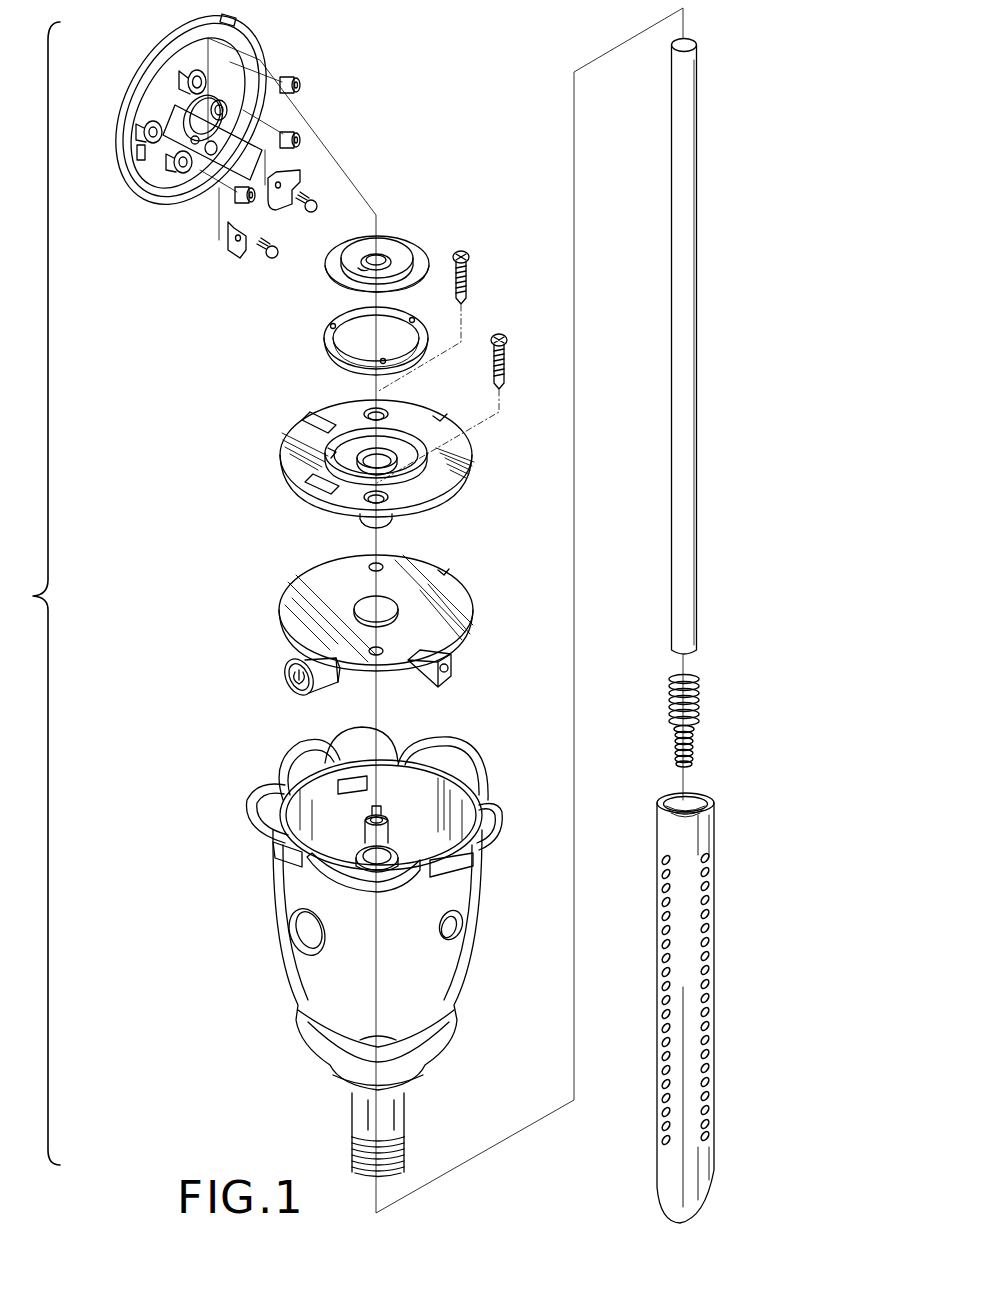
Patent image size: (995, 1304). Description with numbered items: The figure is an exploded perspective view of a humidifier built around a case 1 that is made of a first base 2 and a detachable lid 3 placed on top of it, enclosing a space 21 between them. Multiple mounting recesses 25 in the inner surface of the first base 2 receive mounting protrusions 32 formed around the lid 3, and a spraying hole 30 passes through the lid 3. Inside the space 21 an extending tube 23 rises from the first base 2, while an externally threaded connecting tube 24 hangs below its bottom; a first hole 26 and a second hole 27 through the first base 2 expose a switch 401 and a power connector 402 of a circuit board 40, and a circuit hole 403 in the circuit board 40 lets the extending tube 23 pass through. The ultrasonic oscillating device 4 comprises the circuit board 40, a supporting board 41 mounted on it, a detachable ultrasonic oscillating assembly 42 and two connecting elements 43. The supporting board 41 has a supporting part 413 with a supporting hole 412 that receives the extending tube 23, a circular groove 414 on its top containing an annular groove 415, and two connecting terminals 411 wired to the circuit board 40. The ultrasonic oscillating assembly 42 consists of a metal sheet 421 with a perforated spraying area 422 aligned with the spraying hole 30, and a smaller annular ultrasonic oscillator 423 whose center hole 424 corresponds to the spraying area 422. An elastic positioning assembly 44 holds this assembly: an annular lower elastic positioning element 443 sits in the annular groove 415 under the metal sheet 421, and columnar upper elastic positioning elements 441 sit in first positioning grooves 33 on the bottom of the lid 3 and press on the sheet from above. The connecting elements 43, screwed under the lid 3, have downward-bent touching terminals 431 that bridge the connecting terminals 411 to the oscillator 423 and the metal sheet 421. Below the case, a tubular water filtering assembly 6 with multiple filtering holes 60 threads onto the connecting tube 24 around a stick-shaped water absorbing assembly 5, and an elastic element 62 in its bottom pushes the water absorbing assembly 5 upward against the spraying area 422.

The case 1 is at (306, 1082).
The first base 2 is at (450, 980).
The lid 3 is at (135, 92).
The ultrasonic oscillating device 4 is at (222, 612).
The water absorbing assembly 5 is at (700, 327).
The water filtering assembly 6 is at (718, 840).
The space 21 is at (415, 805).
The extending tube 23 is at (398, 870).
The connecting tube 24 is at (390, 1118).
The mounting recesses 25 is at (348, 785).
The first hole 26 is at (305, 935).
The second hole 27 is at (450, 925).
The spraying hole 30 is at (203, 118).
The mounting protrusions 32 is at (140, 160).
The first positioning grooves 33 is at (195, 82).
The circuit board 40 is at (455, 608).
The supporting board 41 is at (458, 460).
The ultrasonic oscillating assembly 42 is at (390, 228).
The connecting elements 43 is at (284, 184).
The elastic positioning assembly 44 is at (318, 336).
The filtering holes 60 is at (708, 921).
The elastic element 62 is at (698, 703).
The switch 401 is at (303, 678).
The power connector 402 is at (440, 668).
The circuit hole 403 is at (365, 605).
The connecting terminals 411 is at (325, 420).
The supporting hole 412 is at (385, 466).
The supporting part 413 is at (390, 438).
The circular groove 414 is at (335, 455).
The annular groove 415 is at (430, 462).
The metal sheet 421 is at (350, 288).
The spraying area 422 is at (393, 270).
The ultrasonic oscillator 423 is at (390, 260).
The center hole 424 is at (368, 262).
The touching terminals 431 is at (320, 188).
The columnar upper elastic positioning elements 441 is at (288, 78).
The annular lower elastic positioning element 443 is at (335, 352).